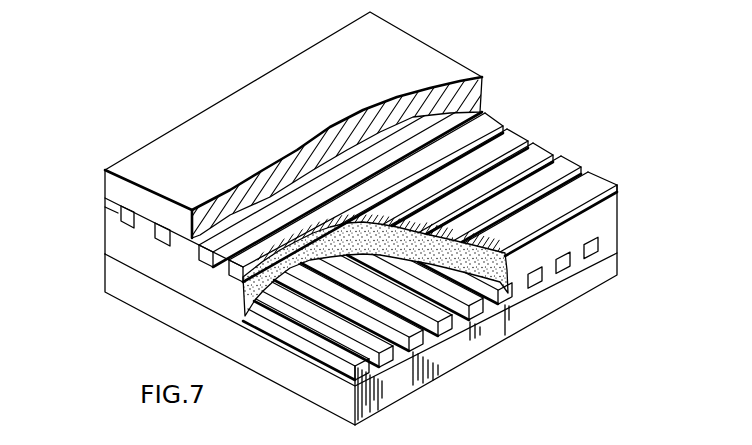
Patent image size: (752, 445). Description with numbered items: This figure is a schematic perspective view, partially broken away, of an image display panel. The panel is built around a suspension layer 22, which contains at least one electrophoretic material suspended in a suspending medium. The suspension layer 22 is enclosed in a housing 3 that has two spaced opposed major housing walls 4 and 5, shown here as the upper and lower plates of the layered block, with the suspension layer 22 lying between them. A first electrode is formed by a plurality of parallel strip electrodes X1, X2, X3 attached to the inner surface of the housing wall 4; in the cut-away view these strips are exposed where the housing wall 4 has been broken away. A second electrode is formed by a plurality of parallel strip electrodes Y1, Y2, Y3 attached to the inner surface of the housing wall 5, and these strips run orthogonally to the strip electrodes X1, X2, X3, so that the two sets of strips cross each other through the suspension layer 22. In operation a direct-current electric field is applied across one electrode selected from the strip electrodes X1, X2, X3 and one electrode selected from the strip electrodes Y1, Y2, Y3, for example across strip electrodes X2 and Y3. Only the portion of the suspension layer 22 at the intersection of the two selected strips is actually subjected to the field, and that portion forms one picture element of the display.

The housing 3 is at (112, 305).
The housing wall 4 is at (118, 183).
The housing wall 5 is at (112, 279).
The suspension layer 22 is at (110, 234).
The strip electrode X1 is at (609, 173).
The strip electrode X2 is at (576, 163).
The strip electrode X3 is at (551, 143).
The strip electrode Y1 is at (616, 252).
The strip electrode Y2 is at (583, 265).
The strip electrode Y3 is at (551, 277).